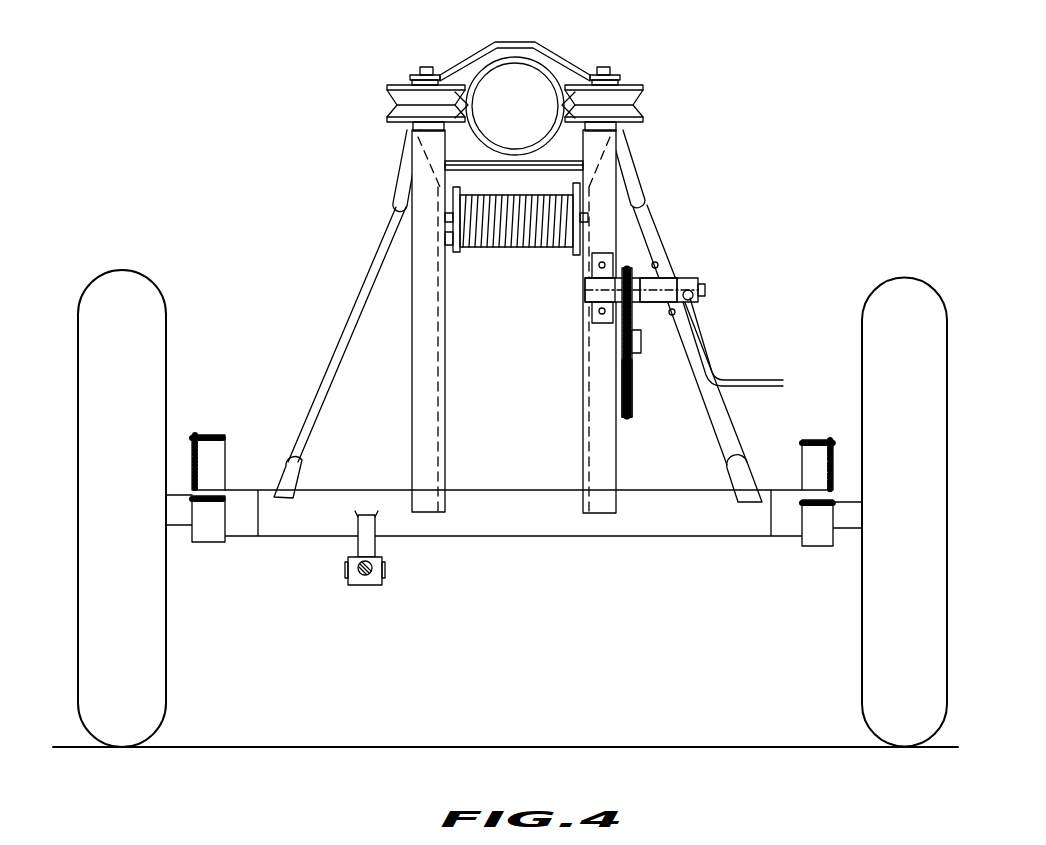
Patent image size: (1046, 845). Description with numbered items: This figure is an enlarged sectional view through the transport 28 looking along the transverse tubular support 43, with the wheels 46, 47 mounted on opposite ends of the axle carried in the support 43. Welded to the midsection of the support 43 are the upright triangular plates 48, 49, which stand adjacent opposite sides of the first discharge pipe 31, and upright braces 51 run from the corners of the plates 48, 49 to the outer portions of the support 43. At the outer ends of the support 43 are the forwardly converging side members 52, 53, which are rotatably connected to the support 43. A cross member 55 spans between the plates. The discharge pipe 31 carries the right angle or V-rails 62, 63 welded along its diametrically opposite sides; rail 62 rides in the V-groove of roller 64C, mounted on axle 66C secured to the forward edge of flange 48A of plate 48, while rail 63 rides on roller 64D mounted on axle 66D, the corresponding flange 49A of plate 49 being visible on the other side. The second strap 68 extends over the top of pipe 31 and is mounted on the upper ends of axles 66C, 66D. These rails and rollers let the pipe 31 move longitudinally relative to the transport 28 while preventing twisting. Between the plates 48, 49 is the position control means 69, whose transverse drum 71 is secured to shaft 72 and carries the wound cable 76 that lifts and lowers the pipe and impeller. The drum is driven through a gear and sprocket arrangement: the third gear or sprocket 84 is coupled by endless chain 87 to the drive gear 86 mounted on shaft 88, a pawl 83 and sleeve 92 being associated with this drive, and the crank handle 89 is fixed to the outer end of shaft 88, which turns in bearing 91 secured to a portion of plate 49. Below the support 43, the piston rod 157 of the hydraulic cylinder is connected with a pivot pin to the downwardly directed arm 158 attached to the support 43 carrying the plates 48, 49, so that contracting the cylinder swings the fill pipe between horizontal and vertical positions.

The transport 28 is at (283, 282).
The first discharge pipe 31 is at (542, 50).
The transverse tubular support 43 is at (555, 520).
The wheel 46 is at (120, 295).
The wheel 47 is at (905, 300).
The upright triangular plate 48 is at (412, 393).
The upright triangular plate 49 is at (618, 462).
The flange of plate 48 48A is at (412, 133).
The upper end of right post 49A is at (617, 133).
The upright brace 51 is at (360, 300).
The side member 52 is at (815, 440).
The side member 53 is at (208, 435).
The cross bar 55 is at (445, 165).
The V-rail 62 is at (457, 97).
The V-rail 63 is at (566, 100).
The roller 64C is at (390, 87).
The roller 64D is at (645, 87).
The axle 66C is at (425, 65).
The axle 66D is at (606, 65).
The second strap 68 is at (560, 62).
The position control means 69 is at (493, 266).
The transverse drum 71 is at (453, 238).
The shaft 72 is at (445, 218).
The cable 76 is at (512, 235).
The pawl 83 is at (642, 345).
The third gear 84 is at (633, 413).
The drive gear 86 is at (620, 305).
The endless chain 87 is at (620, 372).
The shaft 88 is at (700, 290).
The crank handle 89 is at (720, 354).
The bearing 91 is at (598, 290).
The shaft sleeve 92 is at (658, 285).
The piston rod 157 is at (365, 575).
The arm 158 is at (358, 545).